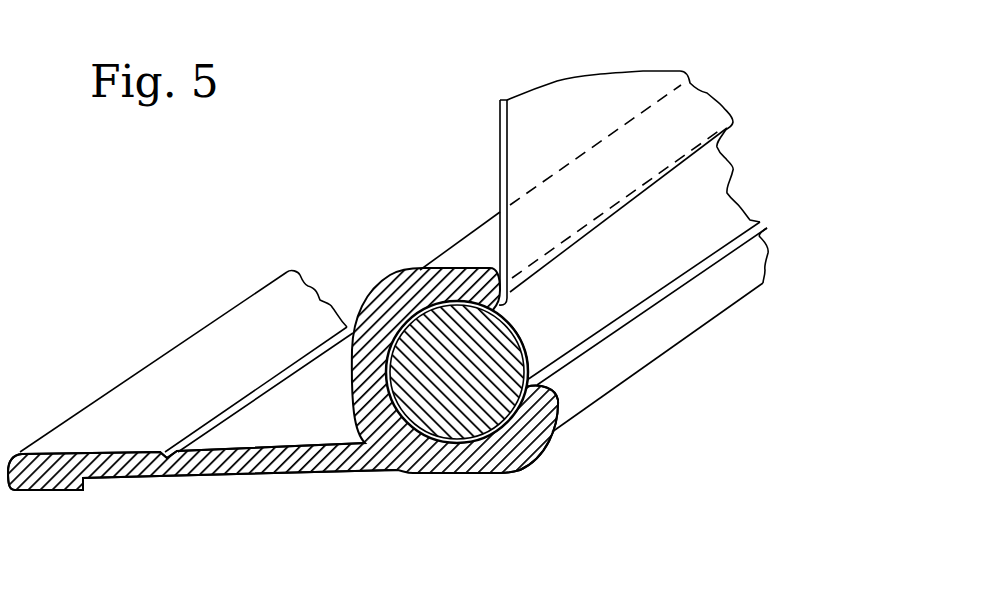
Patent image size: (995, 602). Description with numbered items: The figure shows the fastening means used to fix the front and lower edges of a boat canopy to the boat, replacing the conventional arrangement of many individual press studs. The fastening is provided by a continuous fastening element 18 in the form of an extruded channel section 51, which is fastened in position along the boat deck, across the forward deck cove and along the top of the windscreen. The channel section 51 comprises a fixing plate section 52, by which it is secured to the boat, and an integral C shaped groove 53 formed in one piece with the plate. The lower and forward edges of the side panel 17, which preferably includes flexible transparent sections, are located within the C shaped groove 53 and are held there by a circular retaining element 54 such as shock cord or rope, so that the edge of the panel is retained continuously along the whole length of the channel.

The side panel 17 is at (597, 87).
The continuous fastening element 18 is at (175, 487).
The extruded channel section 51 is at (397, 462).
The fixing plate section 52 is at (205, 355).
The C shaped groove 53 is at (513, 447).
The circular retaining element 54 is at (567, 323).